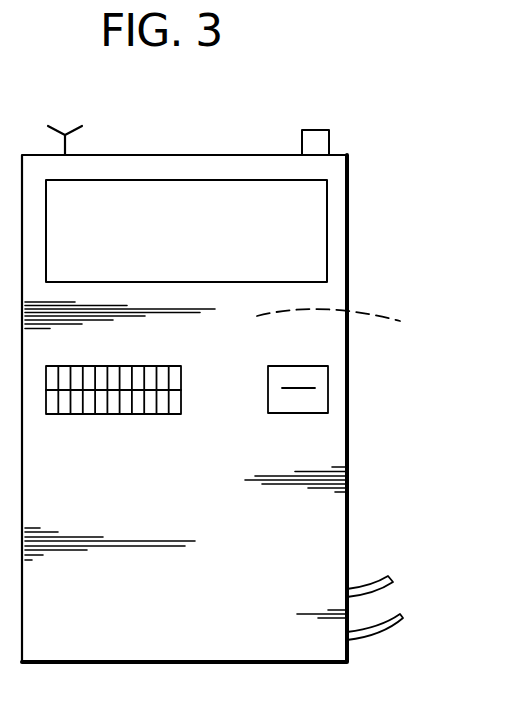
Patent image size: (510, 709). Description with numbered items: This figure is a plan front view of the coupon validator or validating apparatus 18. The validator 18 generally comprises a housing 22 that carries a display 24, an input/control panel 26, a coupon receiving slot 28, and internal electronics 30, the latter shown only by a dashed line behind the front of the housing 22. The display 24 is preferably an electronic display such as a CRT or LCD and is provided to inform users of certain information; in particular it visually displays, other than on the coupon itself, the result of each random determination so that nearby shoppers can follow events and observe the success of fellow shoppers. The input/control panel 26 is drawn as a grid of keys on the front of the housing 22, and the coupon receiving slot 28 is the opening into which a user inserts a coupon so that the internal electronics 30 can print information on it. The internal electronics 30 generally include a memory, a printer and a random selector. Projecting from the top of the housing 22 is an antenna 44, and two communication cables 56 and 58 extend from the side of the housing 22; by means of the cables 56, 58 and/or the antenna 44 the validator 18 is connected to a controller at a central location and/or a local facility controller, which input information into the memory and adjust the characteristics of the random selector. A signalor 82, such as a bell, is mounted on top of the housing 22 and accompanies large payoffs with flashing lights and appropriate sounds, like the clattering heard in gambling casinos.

The coupon validator 18 is at (241, 376).
The housing 22 is at (349, 245).
The display 24 is at (315, 207).
The input/control panel 26 is at (123, 414).
The coupon receiving slot 28 is at (302, 390).
The internal electronics 30 is at (347, 323).
The antenna 44 is at (68, 143).
The communication cable 56 is at (378, 634).
The communication cable 58 is at (370, 583).
The signalor 82 is at (299, 133).